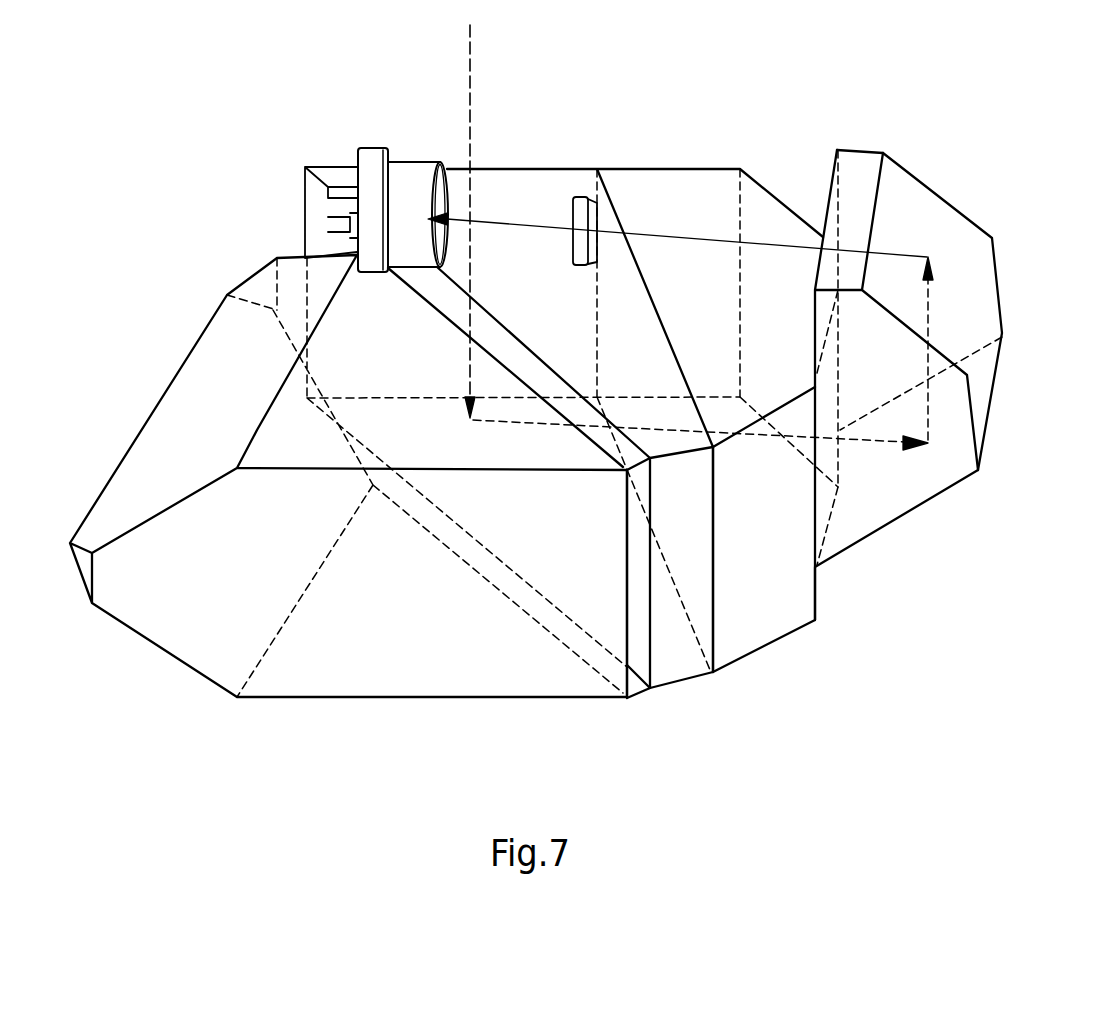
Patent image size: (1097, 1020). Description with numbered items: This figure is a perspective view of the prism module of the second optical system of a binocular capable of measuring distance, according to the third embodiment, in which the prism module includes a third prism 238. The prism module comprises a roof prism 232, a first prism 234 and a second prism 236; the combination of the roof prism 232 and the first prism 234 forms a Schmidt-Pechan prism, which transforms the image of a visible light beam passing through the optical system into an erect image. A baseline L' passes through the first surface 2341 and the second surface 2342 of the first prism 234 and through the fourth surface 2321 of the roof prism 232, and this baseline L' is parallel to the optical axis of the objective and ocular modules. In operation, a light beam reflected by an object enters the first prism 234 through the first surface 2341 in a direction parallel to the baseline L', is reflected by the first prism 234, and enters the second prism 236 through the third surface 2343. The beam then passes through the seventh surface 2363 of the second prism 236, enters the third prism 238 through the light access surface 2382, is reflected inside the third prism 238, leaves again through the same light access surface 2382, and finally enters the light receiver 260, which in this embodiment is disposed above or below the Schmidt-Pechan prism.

The roof prism 232 is at (343, 647).
The fourth surface 2321 is at (630, 628).
The first prism 234 is at (530, 200).
The first surface 2341 is at (362, 163).
The second surface 2342 is at (642, 590).
The third surface 2343 is at (713, 505).
The second prism 236 is at (675, 207).
The seventh surface 2363 is at (817, 580).
The third prism 238 is at (953, 172).
The light access surface 2382 is at (813, 340).
The light receiver 260 is at (406, 192).
The baseline L' is at (506, 209).